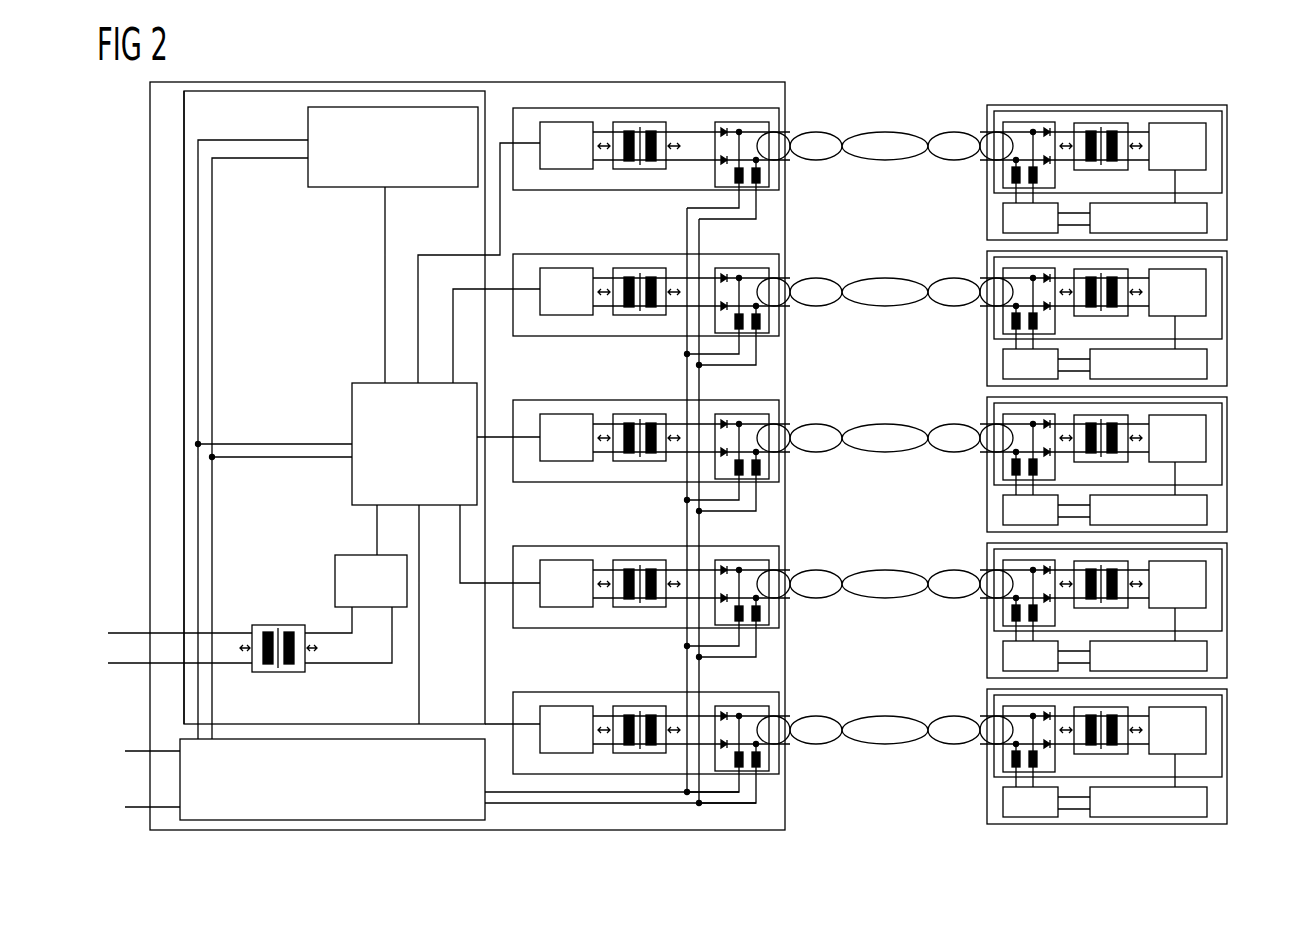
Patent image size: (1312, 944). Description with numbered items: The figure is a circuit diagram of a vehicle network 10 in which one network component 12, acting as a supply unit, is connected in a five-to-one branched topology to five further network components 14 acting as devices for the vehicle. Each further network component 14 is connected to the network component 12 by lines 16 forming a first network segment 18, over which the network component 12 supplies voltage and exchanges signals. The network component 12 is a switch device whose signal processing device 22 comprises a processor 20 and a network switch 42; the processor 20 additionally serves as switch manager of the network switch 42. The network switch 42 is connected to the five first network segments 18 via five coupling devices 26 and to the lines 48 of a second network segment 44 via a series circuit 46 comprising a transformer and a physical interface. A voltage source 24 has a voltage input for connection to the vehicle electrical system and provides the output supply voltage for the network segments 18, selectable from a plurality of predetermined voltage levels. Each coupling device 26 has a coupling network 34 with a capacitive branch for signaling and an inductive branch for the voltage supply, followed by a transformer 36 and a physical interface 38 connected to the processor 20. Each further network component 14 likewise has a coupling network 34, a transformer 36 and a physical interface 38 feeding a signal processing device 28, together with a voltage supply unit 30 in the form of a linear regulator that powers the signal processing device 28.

The vehicle network 10 is at (934, 114).
The network component 12 is at (150, 246).
The further network component 14 is at (1227, 173).
The lines 16 is at (860, 129).
The network segment 18 is at (1237, 141).
The processor 20 is at (340, 187).
The signal processing device 22 is at (184, 301).
The voltage source 24 is at (325, 739).
The coupling device 26 is at (786, 183).
The signal processing device 28 is at (1227, 218).
The voltage supply unit 30 is at (1003, 218).
The coupling network 34 is at (714, 176).
The transformer 36 is at (287, 625).
The physical interface 38 is at (345, 555).
The network switch 42 is at (352, 484).
The second network segment 44 is at (137, 208).
The series circuit 46 is at (255, 541).
The lines 48 is at (138, 663).